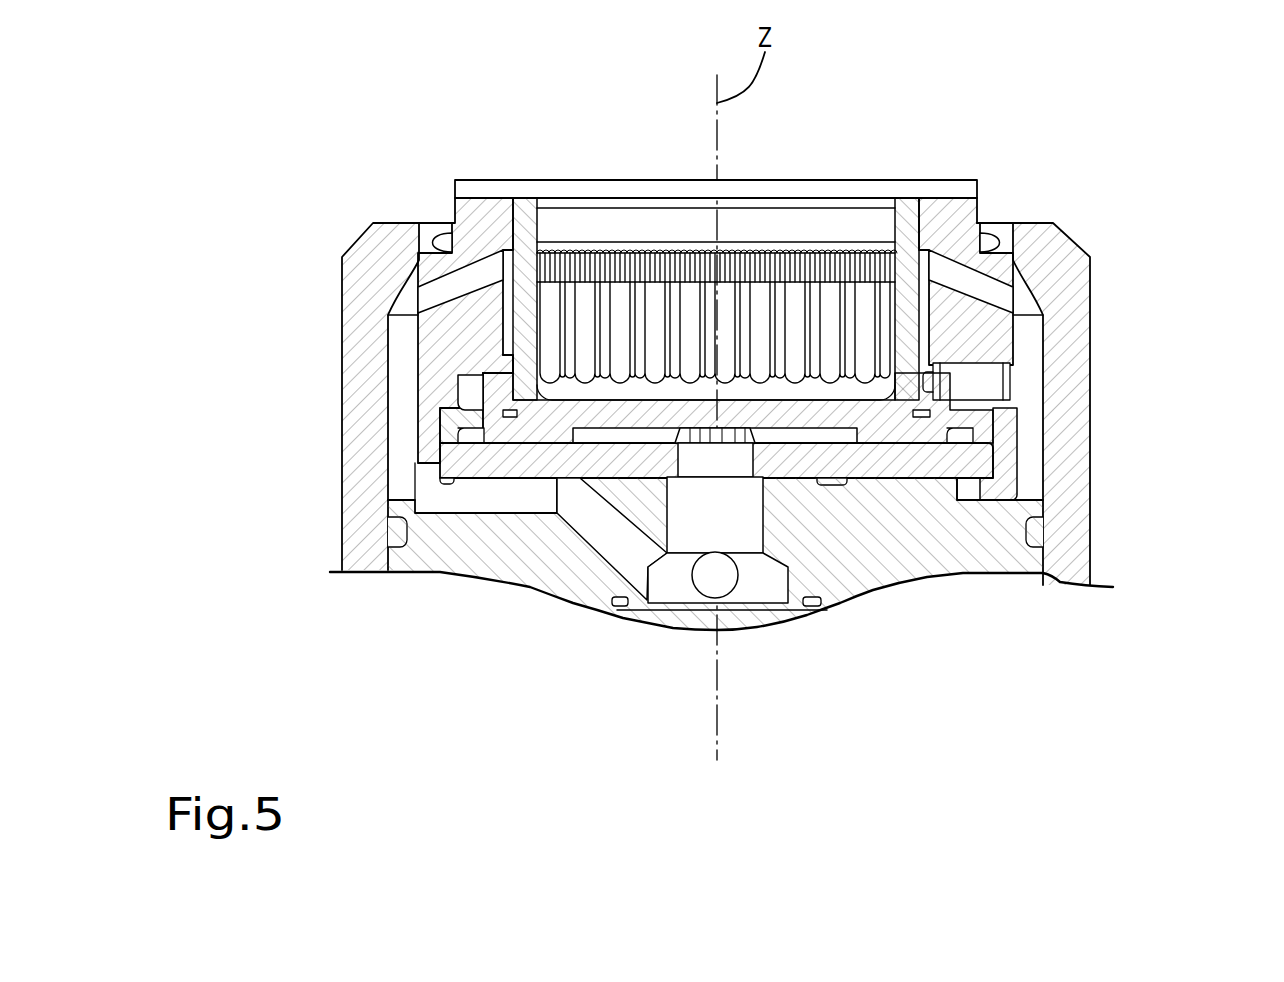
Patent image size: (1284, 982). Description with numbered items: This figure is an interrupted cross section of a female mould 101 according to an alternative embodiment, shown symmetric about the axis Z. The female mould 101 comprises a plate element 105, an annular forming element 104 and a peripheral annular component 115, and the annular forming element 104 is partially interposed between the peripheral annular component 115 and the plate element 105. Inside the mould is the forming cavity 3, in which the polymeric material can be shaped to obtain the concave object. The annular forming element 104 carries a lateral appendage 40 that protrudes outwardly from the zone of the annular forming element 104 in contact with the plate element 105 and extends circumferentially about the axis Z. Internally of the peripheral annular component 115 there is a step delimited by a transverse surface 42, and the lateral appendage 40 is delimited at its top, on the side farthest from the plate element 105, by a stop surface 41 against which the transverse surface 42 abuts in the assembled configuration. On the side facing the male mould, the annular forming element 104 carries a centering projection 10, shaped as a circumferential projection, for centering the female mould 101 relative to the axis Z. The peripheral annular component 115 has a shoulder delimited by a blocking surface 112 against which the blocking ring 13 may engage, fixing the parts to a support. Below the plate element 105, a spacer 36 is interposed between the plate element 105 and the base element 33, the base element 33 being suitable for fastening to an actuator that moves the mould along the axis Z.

The female mould 101 is at (1118, 166).
The centering projection 10 is at (475, 180).
The blocking surface 112 is at (430, 250).
The blocking ring 13 is at (1092, 305).
The forming cavity 3 is at (640, 222).
The annular forming element 104 is at (538, 270).
The plate element 105 is at (783, 410).
The peripheral annular component 115 is at (975, 343).
The stop surface 41 is at (493, 372).
The transverse surface 42 is at (460, 398).
The lateral appendage 40 is at (500, 397).
The spacer 36 is at (953, 462).
The base element 33 is at (883, 570).